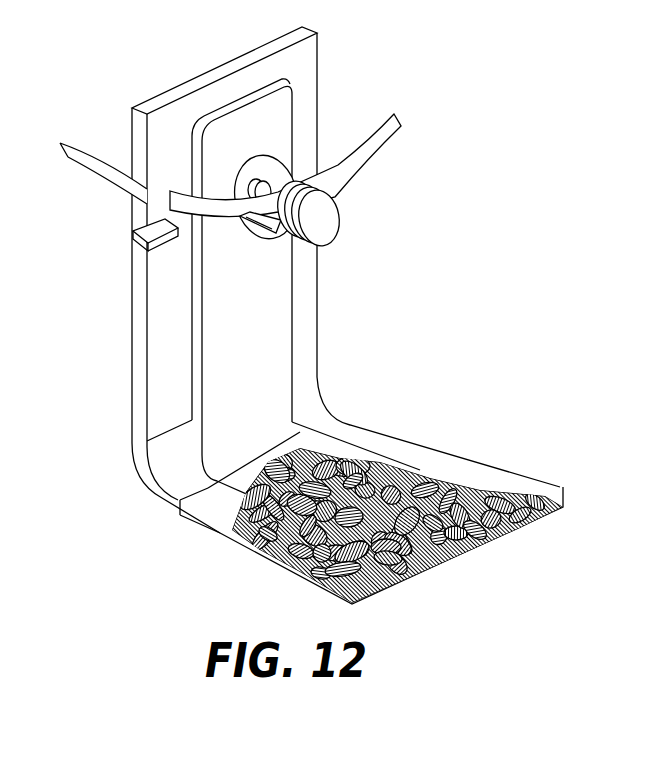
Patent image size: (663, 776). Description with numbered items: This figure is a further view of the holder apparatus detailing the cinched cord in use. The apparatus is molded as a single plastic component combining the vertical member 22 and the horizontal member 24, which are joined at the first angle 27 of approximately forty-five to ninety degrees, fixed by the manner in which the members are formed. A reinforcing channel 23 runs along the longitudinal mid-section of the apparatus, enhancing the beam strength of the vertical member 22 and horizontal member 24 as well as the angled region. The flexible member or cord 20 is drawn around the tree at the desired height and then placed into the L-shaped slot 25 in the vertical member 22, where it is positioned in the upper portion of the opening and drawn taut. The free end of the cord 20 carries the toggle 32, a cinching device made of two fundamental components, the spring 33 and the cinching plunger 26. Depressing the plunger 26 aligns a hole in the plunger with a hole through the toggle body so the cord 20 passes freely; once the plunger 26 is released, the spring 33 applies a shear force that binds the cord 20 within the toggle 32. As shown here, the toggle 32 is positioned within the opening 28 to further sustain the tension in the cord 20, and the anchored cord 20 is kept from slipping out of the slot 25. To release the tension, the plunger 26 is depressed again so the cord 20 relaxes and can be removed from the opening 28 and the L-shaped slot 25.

The cord 20 is at (88, 166).
The vertical member 22 is at (273, 328).
The reinforcing channel 23 is at (300, 445).
The horizontal member 24 is at (210, 520).
The L-shaped slot 25 is at (163, 247).
The cinching plunger 26 is at (325, 222).
The first angle 27 is at (180, 467).
The opening 28 is at (240, 147).
The toggle 32 is at (265, 230).
The spring 33 is at (263, 183).